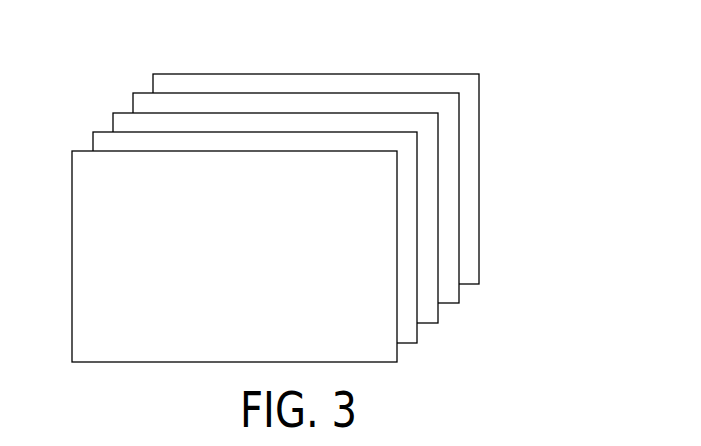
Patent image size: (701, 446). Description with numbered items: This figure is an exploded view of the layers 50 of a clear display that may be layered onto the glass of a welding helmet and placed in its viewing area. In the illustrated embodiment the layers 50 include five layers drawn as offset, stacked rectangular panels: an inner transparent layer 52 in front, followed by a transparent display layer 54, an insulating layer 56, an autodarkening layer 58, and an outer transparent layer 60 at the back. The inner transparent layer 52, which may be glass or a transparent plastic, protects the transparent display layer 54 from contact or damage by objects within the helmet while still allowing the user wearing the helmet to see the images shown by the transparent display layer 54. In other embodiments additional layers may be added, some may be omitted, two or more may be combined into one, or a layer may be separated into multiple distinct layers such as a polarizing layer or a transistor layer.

The layers 50 is at (547, 56).
The inner transparent layer 52 is at (154, 363).
The transparent display layer 54 is at (405, 343).
The insulating layer 56 is at (112, 121).
The autodarkening layer 58 is at (448, 303).
The outer transparent layer 60 is at (152, 82).